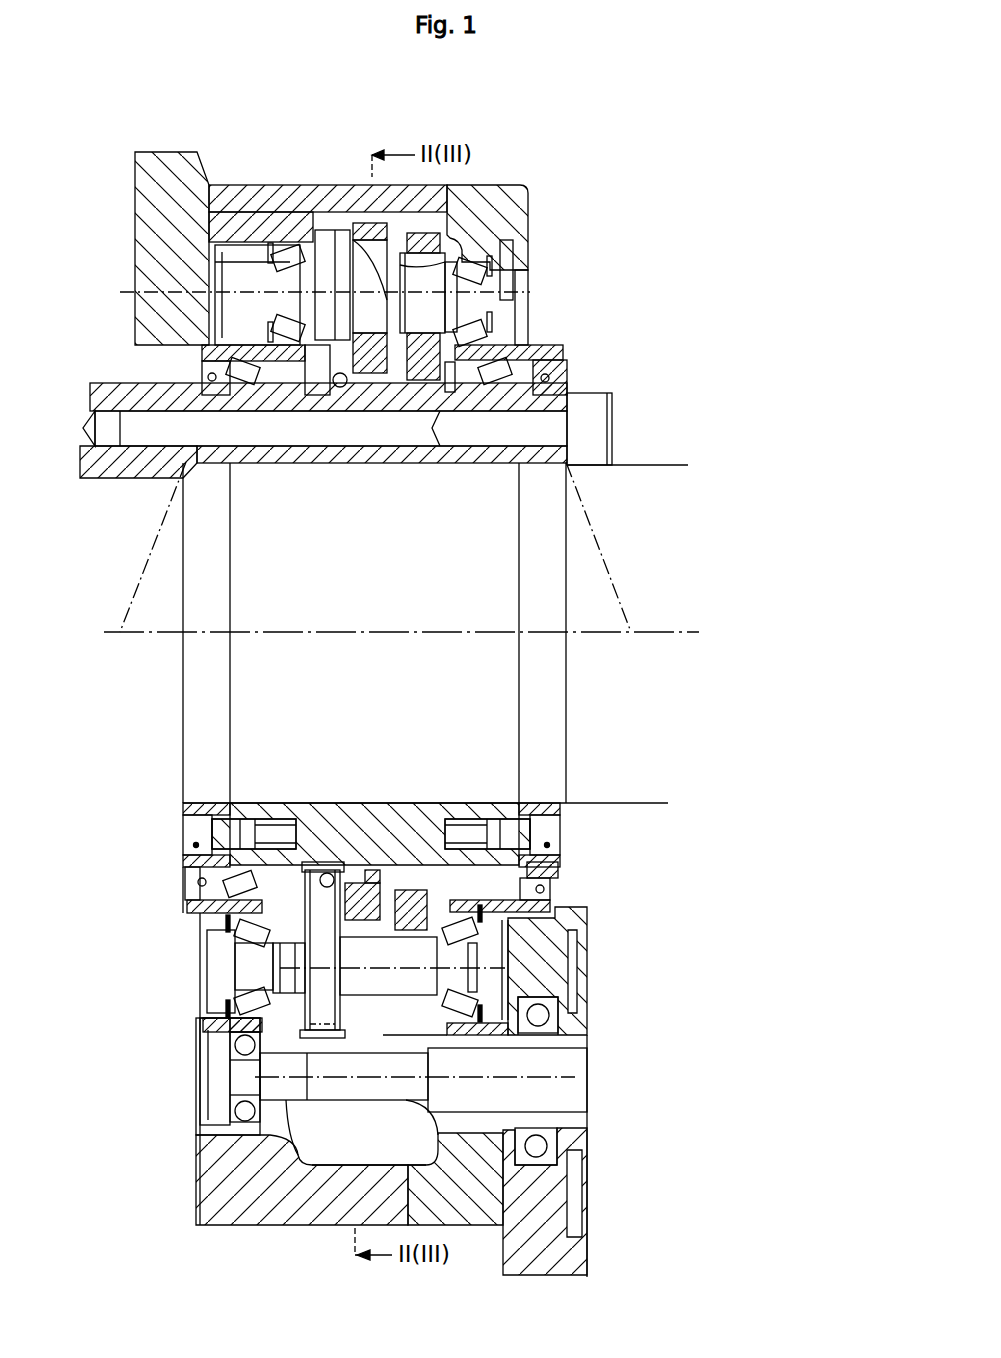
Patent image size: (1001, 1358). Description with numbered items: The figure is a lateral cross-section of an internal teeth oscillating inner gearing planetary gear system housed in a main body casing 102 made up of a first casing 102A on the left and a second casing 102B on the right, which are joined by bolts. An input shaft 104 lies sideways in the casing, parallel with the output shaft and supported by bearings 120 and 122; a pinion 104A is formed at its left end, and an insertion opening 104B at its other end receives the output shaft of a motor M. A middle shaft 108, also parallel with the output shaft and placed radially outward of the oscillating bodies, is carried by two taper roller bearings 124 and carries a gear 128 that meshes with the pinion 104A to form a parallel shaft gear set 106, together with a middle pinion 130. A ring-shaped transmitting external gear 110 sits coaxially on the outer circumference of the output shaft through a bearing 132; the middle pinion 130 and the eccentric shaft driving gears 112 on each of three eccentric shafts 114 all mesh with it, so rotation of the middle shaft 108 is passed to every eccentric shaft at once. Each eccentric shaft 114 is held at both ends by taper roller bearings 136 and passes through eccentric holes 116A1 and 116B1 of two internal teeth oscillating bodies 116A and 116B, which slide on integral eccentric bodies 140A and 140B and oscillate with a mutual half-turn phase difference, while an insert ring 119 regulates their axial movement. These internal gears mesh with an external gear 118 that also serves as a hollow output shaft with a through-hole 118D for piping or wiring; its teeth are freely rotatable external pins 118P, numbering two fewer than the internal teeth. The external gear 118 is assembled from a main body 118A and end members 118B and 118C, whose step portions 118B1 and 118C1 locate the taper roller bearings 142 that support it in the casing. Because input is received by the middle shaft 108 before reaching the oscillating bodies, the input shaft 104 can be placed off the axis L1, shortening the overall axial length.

The main body casing 102 is at (303, 104).
The first casing 102A is at (322, 185).
The second casing 102B is at (497, 185).
The input shaft 104 is at (505, 1210).
The pinion 104A is at (265, 1142).
The insertion opening 104B is at (552, 1111).
The parallel shaft gear set 106 is at (325, 1132).
The middle shaft 108 is at (508, 941).
The transmitting external gear 110 is at (363, 372).
The eccentric shaft driving gear 112 is at (384, 430).
The eccentric shaft 114 is at (468, 304).
The internal teeth oscillating body 116A is at (355, 885).
The eccentric hole 116A1 is at (313, 240).
The internal teeth oscillating body 116B is at (410, 890).
The eccentric hole 116B1 is at (480, 289).
The external gear 118 is at (258, 505).
The main body 118A is at (389, 465).
The end member 118B is at (222, 462).
The step portion 118B1 is at (240, 833).
The end member 118C is at (535, 465).
The step portion 118C1 is at (545, 889).
The through-hole 118D is at (258, 801).
The external pin 118P is at (377, 860).
The insert ring 119 is at (406, 428).
The bearing 120 is at (233, 1107).
The bearing 122 is at (525, 1134).
The taper roller bearing 124 is at (240, 1020).
The gear 128 is at (312, 1008).
The middle pinion 130 is at (330, 1001).
The bearing 132 is at (340, 880).
The taper roller bearing 136 is at (471, 256).
The eccentric body 140A is at (290, 272).
The eccentric body 140B is at (458, 395).
The taper roller bearing 142 is at (230, 375).
The axis L1 is at (671, 632).
The motor M is at (609, 1027).